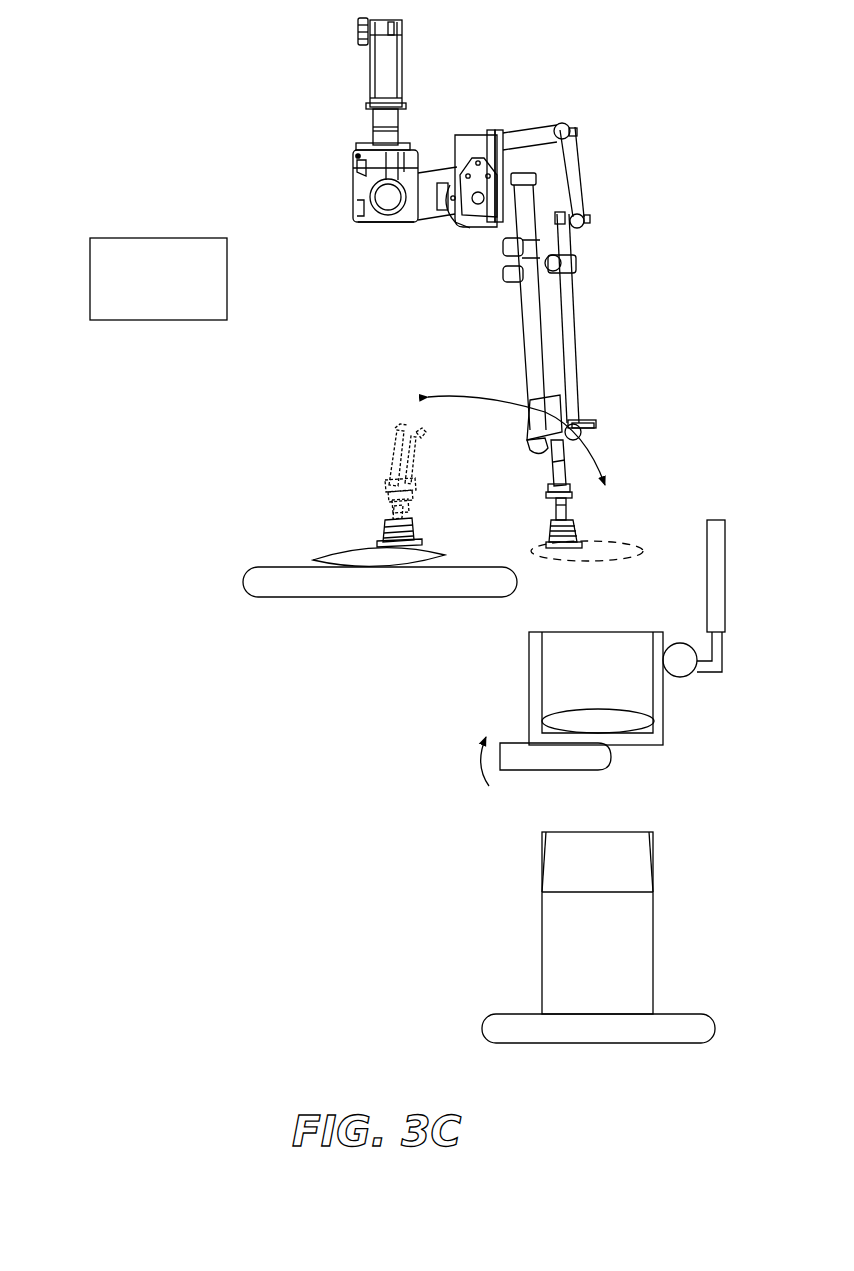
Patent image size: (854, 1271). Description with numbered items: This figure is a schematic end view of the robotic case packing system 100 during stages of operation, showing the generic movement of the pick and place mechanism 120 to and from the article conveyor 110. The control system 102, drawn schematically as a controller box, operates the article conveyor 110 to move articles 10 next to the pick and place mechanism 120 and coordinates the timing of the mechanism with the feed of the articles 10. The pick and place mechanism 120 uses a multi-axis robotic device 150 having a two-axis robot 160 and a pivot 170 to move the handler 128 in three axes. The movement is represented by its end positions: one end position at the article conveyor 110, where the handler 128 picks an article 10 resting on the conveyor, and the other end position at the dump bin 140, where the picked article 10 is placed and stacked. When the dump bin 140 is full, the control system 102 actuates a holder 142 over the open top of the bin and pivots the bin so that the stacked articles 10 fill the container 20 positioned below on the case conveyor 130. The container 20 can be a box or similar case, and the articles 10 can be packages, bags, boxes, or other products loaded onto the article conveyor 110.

The article 10 is at (440, 555).
The container 20 is at (542, 926).
The robotic case packing system 100 is at (92, 92).
The control system 102 is at (108, 238).
The article conveyor 110 is at (270, 597).
The pick and place mechanism 120 is at (342, 132).
The handler 128 is at (385, 526).
The case conveyor 130 is at (532, 1043).
The dump bin 140 is at (528, 684).
The holder 142 is at (727, 591).
The multi-axis robotic device 150 is at (518, 90).
The two-axis robot 160 is at (598, 152).
The pivot 170 is at (445, 222).